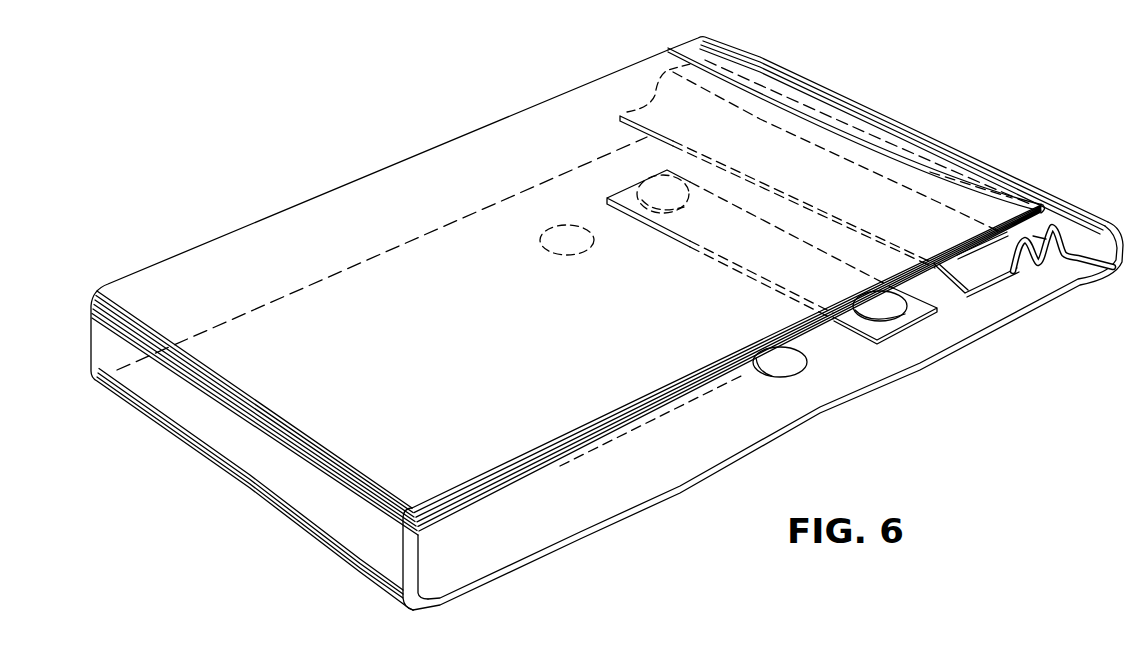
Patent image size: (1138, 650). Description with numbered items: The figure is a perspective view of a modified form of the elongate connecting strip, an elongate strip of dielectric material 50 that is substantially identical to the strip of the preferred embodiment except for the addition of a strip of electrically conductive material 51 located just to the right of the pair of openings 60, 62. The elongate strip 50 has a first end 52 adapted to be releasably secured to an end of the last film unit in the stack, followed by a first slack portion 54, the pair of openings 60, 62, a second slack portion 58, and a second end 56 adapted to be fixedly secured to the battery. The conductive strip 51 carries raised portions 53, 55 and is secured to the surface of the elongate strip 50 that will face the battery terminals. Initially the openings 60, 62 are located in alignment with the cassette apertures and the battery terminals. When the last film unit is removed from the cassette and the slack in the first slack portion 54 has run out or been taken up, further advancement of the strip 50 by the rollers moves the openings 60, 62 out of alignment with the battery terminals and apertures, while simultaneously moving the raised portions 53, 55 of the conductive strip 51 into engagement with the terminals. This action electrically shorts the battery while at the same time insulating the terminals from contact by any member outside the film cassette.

The elongate strip 50 is at (450, 132).
The strip of electrically conductive material 51 is at (925, 311).
The first end 52 is at (948, 170).
The raised portion 53 is at (646, 185).
The first slack portion 54 is at (641, 397).
The raised portion 55 is at (873, 298).
The second end 56 is at (973, 282).
The second slack portion 58 is at (1040, 238).
The opening 60 is at (540, 240).
The opening 62 is at (752, 352).